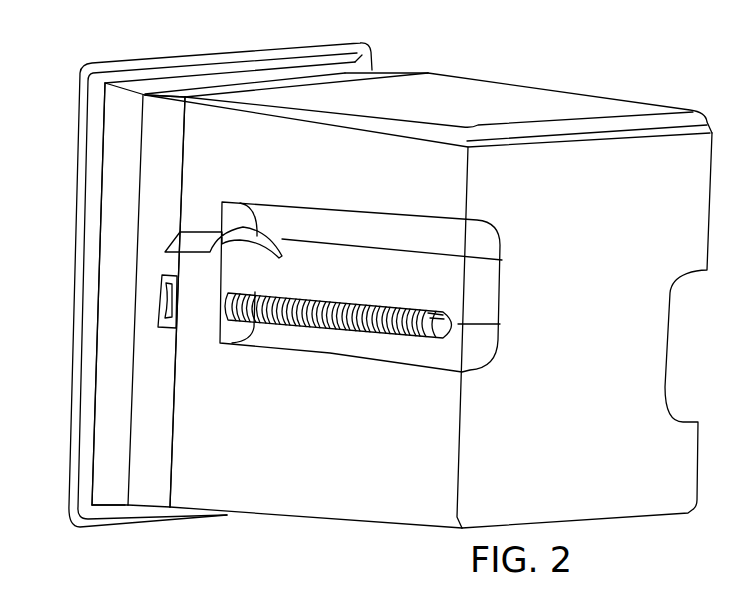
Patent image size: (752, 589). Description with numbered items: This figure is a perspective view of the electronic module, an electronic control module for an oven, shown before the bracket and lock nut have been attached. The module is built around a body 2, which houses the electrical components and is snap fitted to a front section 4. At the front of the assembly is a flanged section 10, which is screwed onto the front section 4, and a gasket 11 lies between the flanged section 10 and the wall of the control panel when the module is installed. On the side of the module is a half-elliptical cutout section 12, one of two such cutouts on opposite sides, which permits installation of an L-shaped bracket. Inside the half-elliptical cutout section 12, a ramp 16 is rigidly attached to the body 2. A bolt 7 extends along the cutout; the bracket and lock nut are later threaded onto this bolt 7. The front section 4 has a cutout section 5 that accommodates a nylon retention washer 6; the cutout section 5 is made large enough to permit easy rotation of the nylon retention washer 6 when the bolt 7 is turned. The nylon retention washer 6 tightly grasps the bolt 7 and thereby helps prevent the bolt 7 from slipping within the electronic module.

The body 2 is at (590, 426).
The front section 4 is at (158, 483).
The cutout section 5 is at (158, 325).
The nylon retention washer 6 is at (162, 277).
The bolt 7 is at (299, 299).
The flanged section 10 is at (122, 133).
The gasket 11 is at (131, 70).
The half-elliptical cutout section 12 is at (478, 217).
The ramp 16 is at (211, 232).